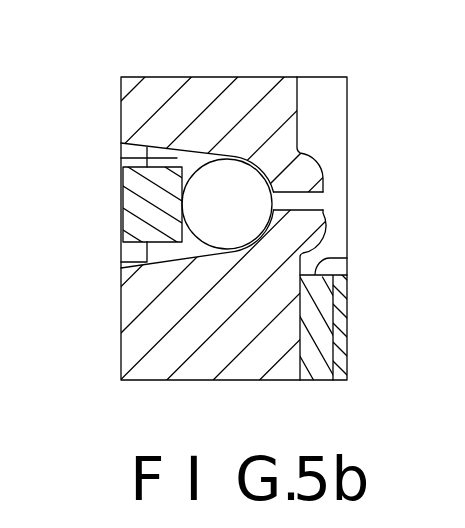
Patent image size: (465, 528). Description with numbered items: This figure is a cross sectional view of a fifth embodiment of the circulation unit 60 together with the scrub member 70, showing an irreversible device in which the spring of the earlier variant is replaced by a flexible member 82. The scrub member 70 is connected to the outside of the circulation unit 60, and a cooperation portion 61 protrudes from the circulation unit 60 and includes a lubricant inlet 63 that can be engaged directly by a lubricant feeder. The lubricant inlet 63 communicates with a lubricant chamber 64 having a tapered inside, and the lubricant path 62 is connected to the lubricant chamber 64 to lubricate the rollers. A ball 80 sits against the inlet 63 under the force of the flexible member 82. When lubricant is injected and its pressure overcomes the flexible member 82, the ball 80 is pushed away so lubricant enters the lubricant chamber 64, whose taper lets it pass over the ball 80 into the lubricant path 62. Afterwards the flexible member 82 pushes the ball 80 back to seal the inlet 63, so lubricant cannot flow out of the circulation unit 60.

The circulation unit 60 is at (163, 76).
The cooperation portion 61 is at (302, 156).
The lubricant path 62 is at (140, 251).
The lubricant inlet 63 is at (318, 203).
The lubricant chamber 64 is at (121, 157).
The scrub member 70 is at (330, 258).
The ball 80 is at (233, 228).
The flexible member 82 is at (140, 213).